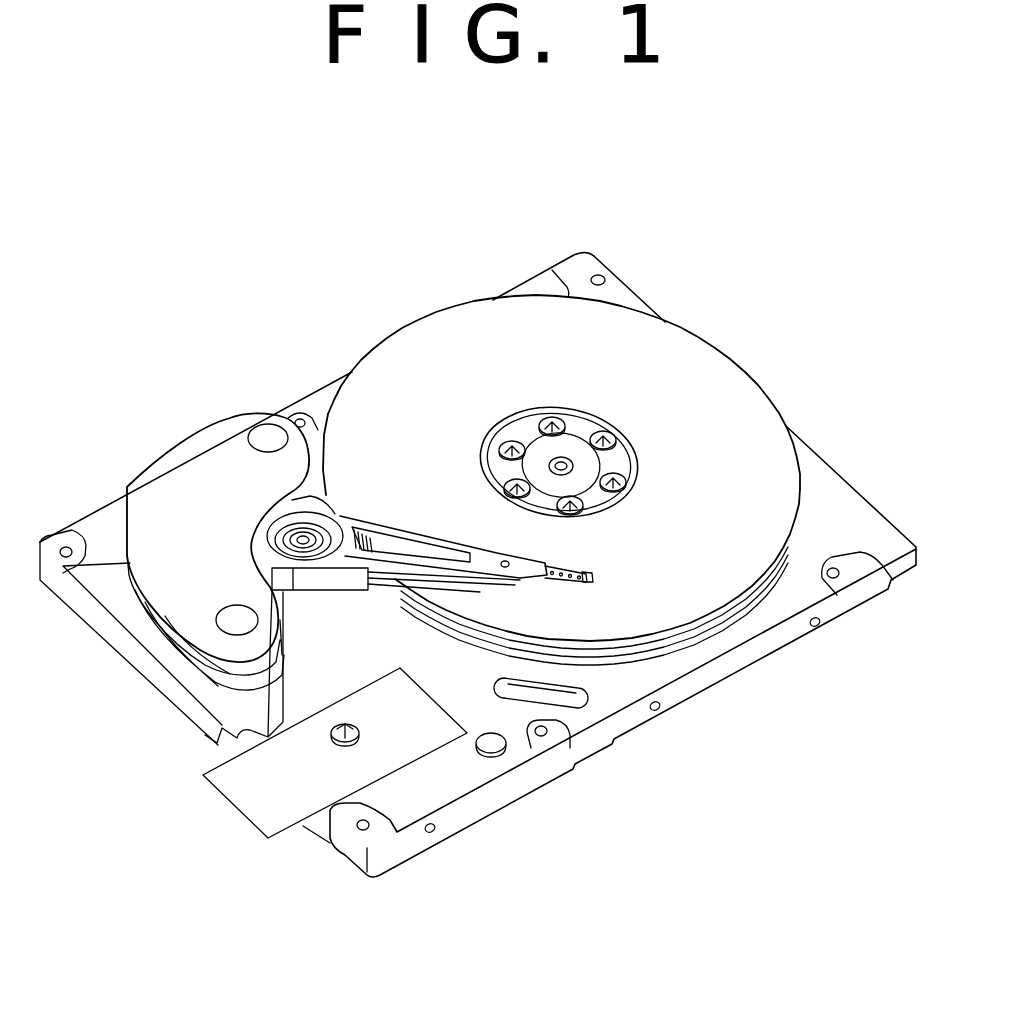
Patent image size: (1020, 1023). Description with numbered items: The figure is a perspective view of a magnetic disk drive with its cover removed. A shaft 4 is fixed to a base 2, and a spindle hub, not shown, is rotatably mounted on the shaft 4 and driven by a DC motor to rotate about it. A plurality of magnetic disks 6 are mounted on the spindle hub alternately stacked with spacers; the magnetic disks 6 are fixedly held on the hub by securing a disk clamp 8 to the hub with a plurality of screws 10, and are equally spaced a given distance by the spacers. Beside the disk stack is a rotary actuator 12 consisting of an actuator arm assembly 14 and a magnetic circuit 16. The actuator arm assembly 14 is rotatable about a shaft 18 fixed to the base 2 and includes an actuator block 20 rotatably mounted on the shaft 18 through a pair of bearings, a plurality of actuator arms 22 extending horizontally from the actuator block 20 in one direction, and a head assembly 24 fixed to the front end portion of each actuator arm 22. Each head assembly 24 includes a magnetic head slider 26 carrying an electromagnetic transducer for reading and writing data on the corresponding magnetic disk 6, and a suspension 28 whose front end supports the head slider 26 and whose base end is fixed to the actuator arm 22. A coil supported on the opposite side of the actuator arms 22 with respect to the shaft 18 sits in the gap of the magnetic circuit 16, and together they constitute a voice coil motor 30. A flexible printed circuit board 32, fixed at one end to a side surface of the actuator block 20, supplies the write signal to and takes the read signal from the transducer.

The base 2 is at (830, 503).
The shaft 4 is at (540, 455).
The magnetic disks 6 is at (452, 348).
The disk clamp 8 is at (576, 424).
The screws 10 is at (500, 444).
The rotary actuator 12 is at (315, 500).
The actuator arm assembly 14 is at (378, 520).
The magnetic circuit 16 is at (182, 618).
The shaft 18 is at (300, 542).
The actuator block 20 is at (352, 575).
The actuator arms 22 is at (416, 536).
The head assembly 24 is at (547, 568).
The magnetic head slider 26 is at (594, 578).
The suspension 28 is at (530, 580).
The voice coil motor 30 is at (200, 452).
The flexible printed circuit board 32 is at (210, 706).